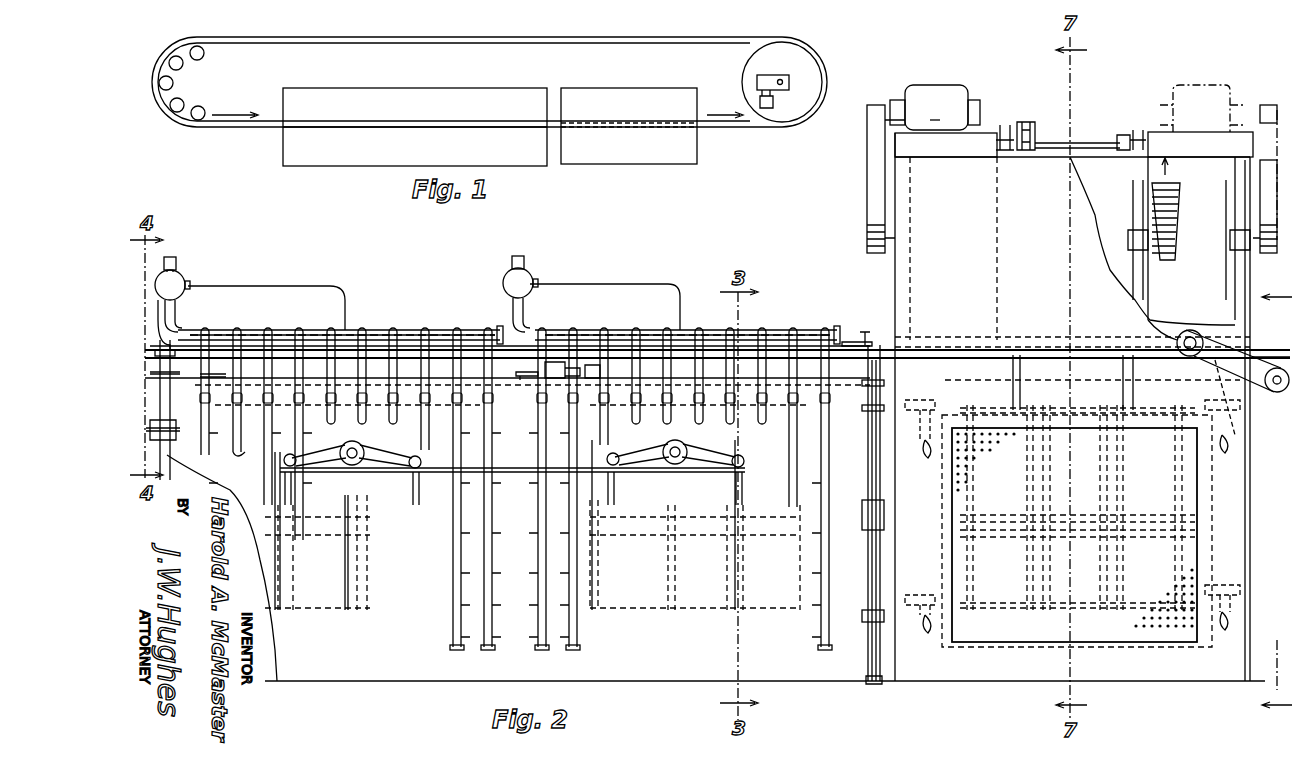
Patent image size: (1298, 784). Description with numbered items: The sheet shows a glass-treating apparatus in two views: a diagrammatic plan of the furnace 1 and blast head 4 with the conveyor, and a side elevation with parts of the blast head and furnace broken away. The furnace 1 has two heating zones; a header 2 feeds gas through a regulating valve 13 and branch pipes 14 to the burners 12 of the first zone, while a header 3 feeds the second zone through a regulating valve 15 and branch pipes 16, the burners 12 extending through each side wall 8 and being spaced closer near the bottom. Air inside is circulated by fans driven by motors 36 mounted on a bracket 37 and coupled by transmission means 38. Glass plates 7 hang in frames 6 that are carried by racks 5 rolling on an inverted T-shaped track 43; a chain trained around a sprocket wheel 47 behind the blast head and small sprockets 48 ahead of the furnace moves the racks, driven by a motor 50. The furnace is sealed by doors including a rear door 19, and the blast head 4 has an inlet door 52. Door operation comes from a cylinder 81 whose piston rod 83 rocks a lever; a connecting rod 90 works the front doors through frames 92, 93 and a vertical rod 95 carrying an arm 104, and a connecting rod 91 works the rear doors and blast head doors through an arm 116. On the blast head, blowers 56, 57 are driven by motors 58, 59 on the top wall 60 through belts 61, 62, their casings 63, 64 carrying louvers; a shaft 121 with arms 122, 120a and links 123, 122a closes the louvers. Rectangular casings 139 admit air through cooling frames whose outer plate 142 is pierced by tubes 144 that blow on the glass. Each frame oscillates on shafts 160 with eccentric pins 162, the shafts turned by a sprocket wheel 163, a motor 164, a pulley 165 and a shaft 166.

In FIG. 1, the furnace 1 is at (430, 79).
In FIG. 2, the furnace 1 is at (443, 367).
In FIG. 2, the header 2 is at (254, 330).
In FIG. 2, the header 3 is at (596, 330).
In FIG. 1, the blast head 4 is at (625, 88).
In FIG. 2, the blast head 4 is at (1234, 542).
In FIG. 2, the carrier 5 is at (1040, 384).
In FIG. 2, the frame 6 is at (340, 612).
In FIG. 2, the glass plate 7 is at (1090, 570).
In FIG. 2, the side wall 8 is at (1277, 426).
In FIG. 2, the burner 12 is at (410, 640).
In FIG. 2, the regulating valve 13 is at (180, 272).
In FIG. 2, the branch pipe 14 is at (405, 372).
In FIG. 2, the regulating valve 15 is at (530, 272).
In FIG. 2, the branch pipe 16 is at (700, 372).
In FIG. 2, the rear door 19 is at (868, 548).
In FIG. 2, the motor 36 is at (352, 441).
In FIG. 2, the bracket 37 is at (500, 466).
In FIG. 2, the transmission means 38 is at (330, 472).
In FIG. 1, the track 43 is at (355, 38).
In FIG. 2, the track 43 is at (868, 340).
In FIG. 1, the sprocket wheel 47 is at (748, 72).
In FIG. 1, the small sprocket 48 is at (185, 72).
In FIG. 1, the motor 50 is at (772, 108).
In FIG. 2, the inlet door 52 is at (878, 682).
In FIG. 2, the blower 56 is at (985, 198).
In FIG. 2, the blower 57 is at (1182, 258).
In FIG. 2, the motor 58 is at (940, 85).
In FIG. 2, the motor 59 is at (1203, 85).
In FIG. 2, the top wall 60 is at (1098, 165).
In FIG. 2, the belt 61 is at (867, 190).
In FIG. 2, the belt 62 is at (1240, 200).
In FIG. 2, the casing 63 is at (940, 147).
In FIG. 2, the casing 64 is at (1180, 132).
In FIG. 2, the cylinder 81 is at (556, 362).
In FIG. 2, the piston rod 83 is at (522, 380).
In FIG. 2, the connecting rod 90 is at (215, 374).
In FIG. 2, the connecting rod 91 is at (850, 340).
In FIG. 2, the frame 92 is at (870, 480).
In FIG. 2, the frame 93 is at (162, 440).
In FIG. 2, the vertical rod 95 is at (166, 410).
In FIG. 2, the arm 104 is at (176, 312).
In FIG. 2, the arm 116 is at (860, 415).
In FIG. 2, the arm 120a is at (1123, 135).
In FIG. 2, the shaft 121 is at (1049, 143).
In FIG. 2, the arm 122 is at (1003, 125).
In FIG. 2, the arm 122a is at (1138, 130).
In FIG. 2, the link 123 is at (1027, 122).
In FIG. 2, the casing 139 is at (1145, 635).
In FIG. 2, the outer plate 142 is at (1094, 628).
In FIG. 2, the tube 144 is at (985, 458).
In FIG. 2, the shaft 160 is at (930, 440).
In FIG. 2, the pin 162 is at (942, 405).
In FIG. 2, the sprocket wheel 163 is at (1240, 450).
In FIG. 2, the motor 164 is at (1285, 392).
In FIG. 2, the pulley 165 is at (1192, 330).
In FIG. 2, the shaft 166 is at (1177, 338).